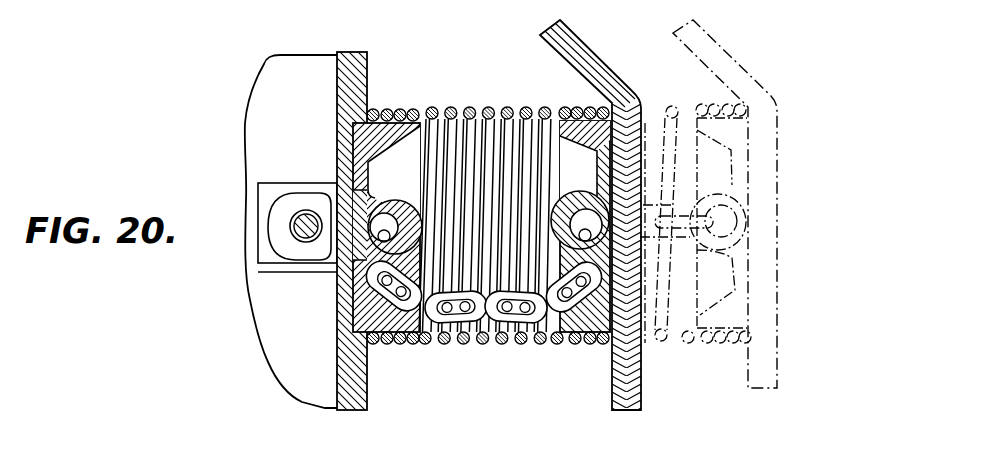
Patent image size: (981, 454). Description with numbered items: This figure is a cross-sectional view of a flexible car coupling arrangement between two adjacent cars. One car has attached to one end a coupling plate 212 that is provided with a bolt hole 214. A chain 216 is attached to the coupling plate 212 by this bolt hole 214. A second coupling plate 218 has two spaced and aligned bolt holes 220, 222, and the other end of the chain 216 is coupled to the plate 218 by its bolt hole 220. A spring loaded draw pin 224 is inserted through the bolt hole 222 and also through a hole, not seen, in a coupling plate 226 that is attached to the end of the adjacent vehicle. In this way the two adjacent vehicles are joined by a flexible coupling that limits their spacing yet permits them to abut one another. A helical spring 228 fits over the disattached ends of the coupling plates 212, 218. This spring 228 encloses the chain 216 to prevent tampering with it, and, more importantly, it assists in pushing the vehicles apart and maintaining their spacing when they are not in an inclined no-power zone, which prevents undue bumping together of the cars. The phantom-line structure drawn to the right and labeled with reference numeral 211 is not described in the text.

The mounting plate 211 is at (748, 376).
The coupling plate 212 is at (694, 125).
The bolt hole 214 is at (587, 209).
The chain 216 is at (510, 322).
The second coupling plate 218 is at (433, 108).
The bolt hole 220 is at (385, 214).
The bolt hole 222 is at (293, 222).
The spring loaded draw pin 224 is at (293, 233).
The coupling plate 226 is at (258, 270).
The helical spring 228 is at (443, 345).